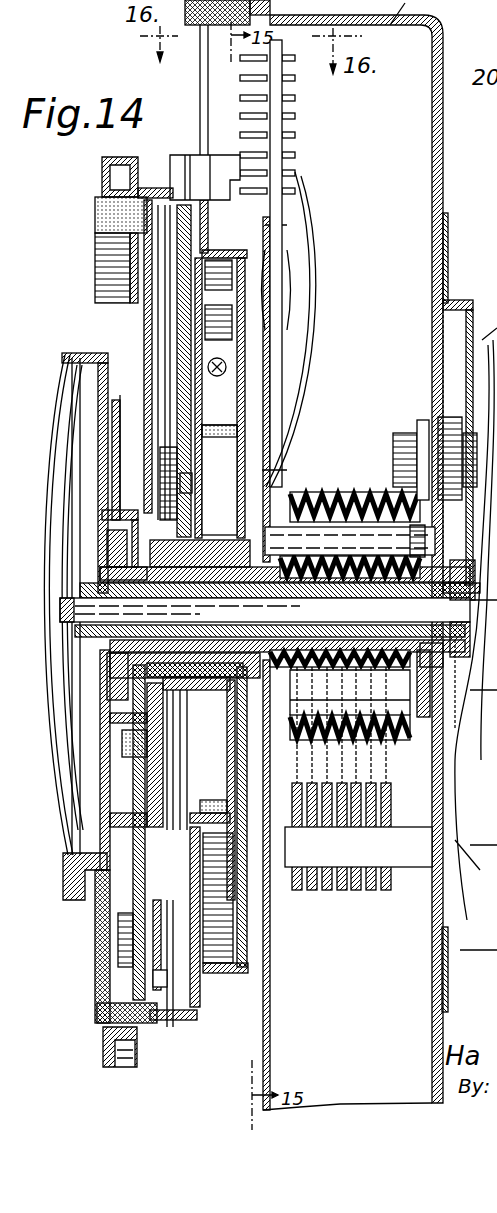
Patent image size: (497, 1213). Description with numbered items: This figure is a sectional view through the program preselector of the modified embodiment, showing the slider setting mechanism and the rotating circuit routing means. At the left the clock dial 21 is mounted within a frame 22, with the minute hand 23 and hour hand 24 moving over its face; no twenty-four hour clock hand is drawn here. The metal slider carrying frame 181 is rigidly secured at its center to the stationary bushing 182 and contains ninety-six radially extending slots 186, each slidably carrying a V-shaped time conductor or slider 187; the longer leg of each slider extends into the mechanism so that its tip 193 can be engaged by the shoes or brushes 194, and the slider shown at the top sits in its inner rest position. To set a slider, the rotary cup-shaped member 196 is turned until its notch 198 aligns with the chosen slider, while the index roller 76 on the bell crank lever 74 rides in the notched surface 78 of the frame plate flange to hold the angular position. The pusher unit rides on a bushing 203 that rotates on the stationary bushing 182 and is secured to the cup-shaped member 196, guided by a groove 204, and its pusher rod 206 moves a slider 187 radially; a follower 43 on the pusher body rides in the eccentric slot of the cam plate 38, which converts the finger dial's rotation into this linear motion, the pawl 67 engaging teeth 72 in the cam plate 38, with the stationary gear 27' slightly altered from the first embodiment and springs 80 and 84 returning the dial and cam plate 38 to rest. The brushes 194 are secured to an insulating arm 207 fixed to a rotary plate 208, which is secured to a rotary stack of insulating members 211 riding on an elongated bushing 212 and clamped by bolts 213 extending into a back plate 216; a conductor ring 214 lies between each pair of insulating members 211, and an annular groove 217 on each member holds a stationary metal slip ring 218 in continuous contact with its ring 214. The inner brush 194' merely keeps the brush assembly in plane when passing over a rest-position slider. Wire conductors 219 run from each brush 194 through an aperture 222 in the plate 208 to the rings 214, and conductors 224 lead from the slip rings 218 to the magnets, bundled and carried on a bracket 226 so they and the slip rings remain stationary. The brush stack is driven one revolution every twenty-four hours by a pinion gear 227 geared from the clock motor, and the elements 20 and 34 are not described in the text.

The housing 20 is at (314, 551).
The clock dial 21 is at (100, 815).
The frame 22 is at (70, 880).
The minute hand 23 is at (68, 487).
The hour hand 24 is at (78, 543).
The stationary gear 27' is at (127, 440).
The wall 34 is at (88, 953).
The cam plate 38 is at (172, 935).
The follower 43 is at (172, 463).
The pawl 67 is at (138, 1047).
The teeth 72 is at (165, 985).
The bell crank lever 74 is at (255, 350).
The index roller 76 is at (276, 330).
The notched surface 78 is at (226, 980).
The spring 80 is at (112, 715).
The spring 84 is at (210, 800).
The slider carrying frame 181 is at (200, 1097).
The stationary bushing 182 is at (215, 565).
The radially extending slots 186 is at (202, 90).
The time conductor or slider 187 is at (220, 146).
The tip 193 is at (238, 200).
The shoes or brushes 194 is at (306, 124).
The inner shoe or brush 194' is at (340, 214).
The cup-shaped member 196 is at (153, 184).
The notch 198 is at (101, 162).
The bushing 203 is at (178, 580).
The groove 204 is at (185, 535).
The pusher rod 206 is at (178, 232).
The insulating arm 207 is at (278, 297).
The rotary plate 208 is at (266, 425).
The insulating members 211 is at (283, 598).
The elongated bushing 212 is at (374, 612).
The bolts 213 is at (350, 541).
The conductor ring 214 is at (283, 510).
The back plate 216 is at (446, 608).
The annular groove 217 is at (305, 495).
The slip ring 218 is at (330, 490).
The wire conductors 219 is at (310, 205).
The aperture 222 is at (415, 848).
The conductors 224 is at (372, 910).
The bracket 226 is at (405, 755).
The pinion gear 227 is at (405, 433).